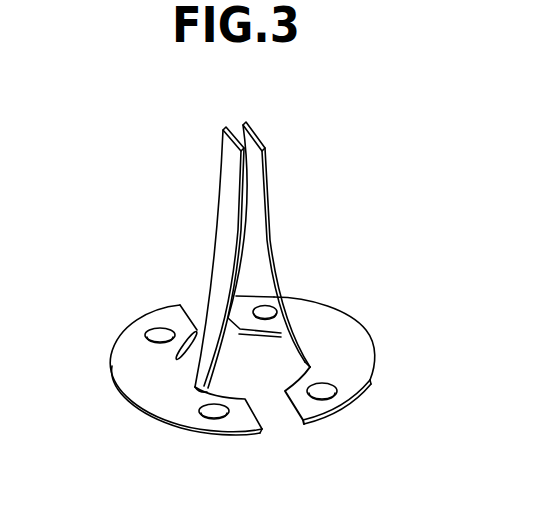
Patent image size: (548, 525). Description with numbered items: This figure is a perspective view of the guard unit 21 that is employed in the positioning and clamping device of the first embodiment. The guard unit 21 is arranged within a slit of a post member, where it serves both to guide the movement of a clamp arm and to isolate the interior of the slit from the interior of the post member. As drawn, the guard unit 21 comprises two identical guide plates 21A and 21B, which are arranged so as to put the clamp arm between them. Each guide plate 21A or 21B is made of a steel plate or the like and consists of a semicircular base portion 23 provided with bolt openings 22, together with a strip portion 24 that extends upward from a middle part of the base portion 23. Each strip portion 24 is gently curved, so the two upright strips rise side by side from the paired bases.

The guard unit 21 is at (111, 402).
The guide plate 21A is at (240, 430).
The guide plate 21B is at (373, 378).
The bolt openings 22 is at (265, 312).
The semicircular base portion 23 is at (128, 352).
The strip portion 24 is at (232, 182).